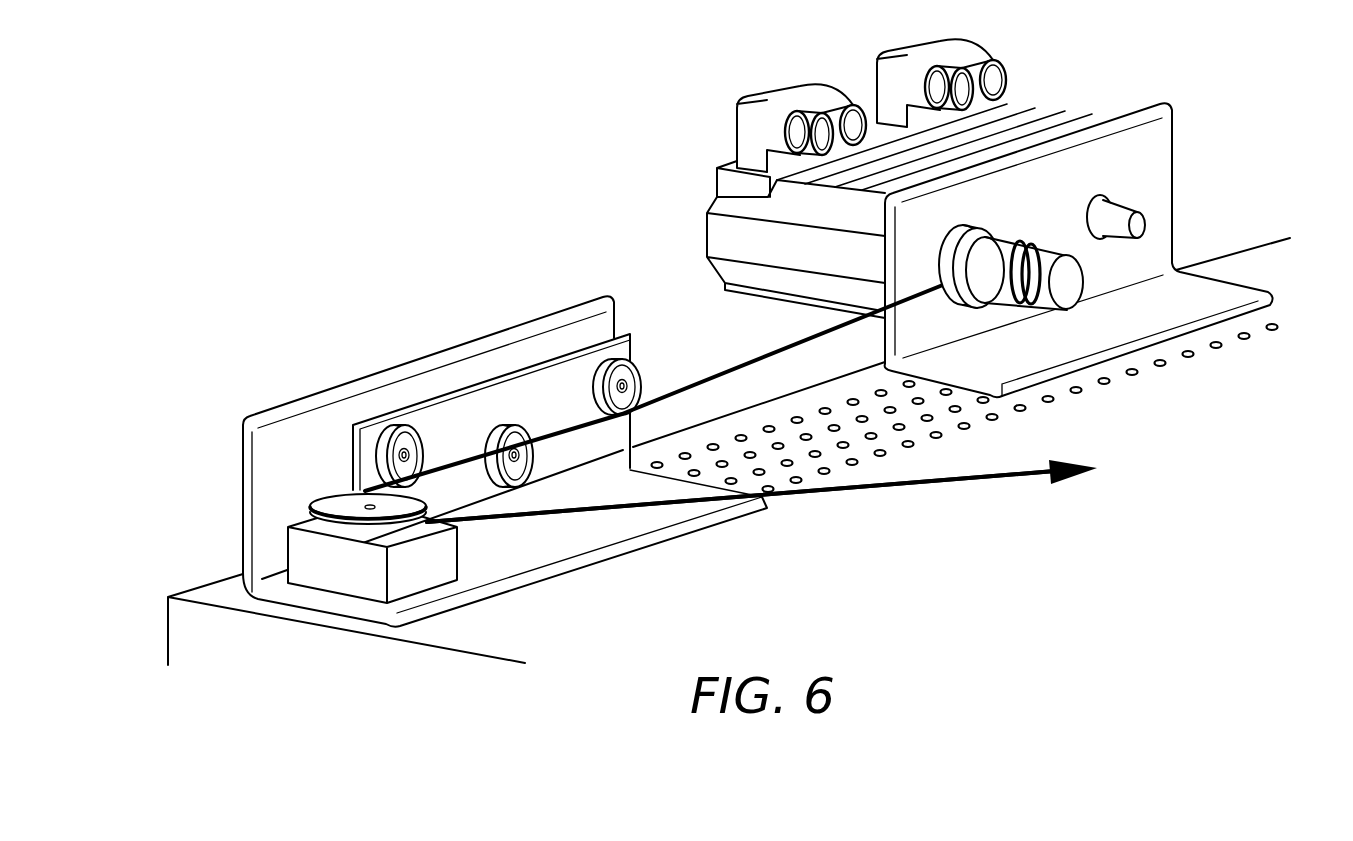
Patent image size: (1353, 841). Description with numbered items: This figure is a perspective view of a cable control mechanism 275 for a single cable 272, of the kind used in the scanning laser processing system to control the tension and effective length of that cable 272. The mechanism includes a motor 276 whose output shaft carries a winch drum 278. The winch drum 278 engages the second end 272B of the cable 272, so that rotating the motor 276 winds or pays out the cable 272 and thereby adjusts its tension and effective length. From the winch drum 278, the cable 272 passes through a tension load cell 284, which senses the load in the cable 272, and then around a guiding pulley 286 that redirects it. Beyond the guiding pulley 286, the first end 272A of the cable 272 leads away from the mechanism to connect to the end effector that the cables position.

The cable 272 is at (891, 502).
The first end of the cable 272A is at (998, 483).
The second end of the cable 272B is at (720, 372).
The cable control mechanism 275 is at (580, 152).
The motor 276 is at (707, 232).
The winch drum 278 is at (1013, 235).
The tension load cell 284 is at (318, 437).
The guiding pulley 286 is at (342, 530).